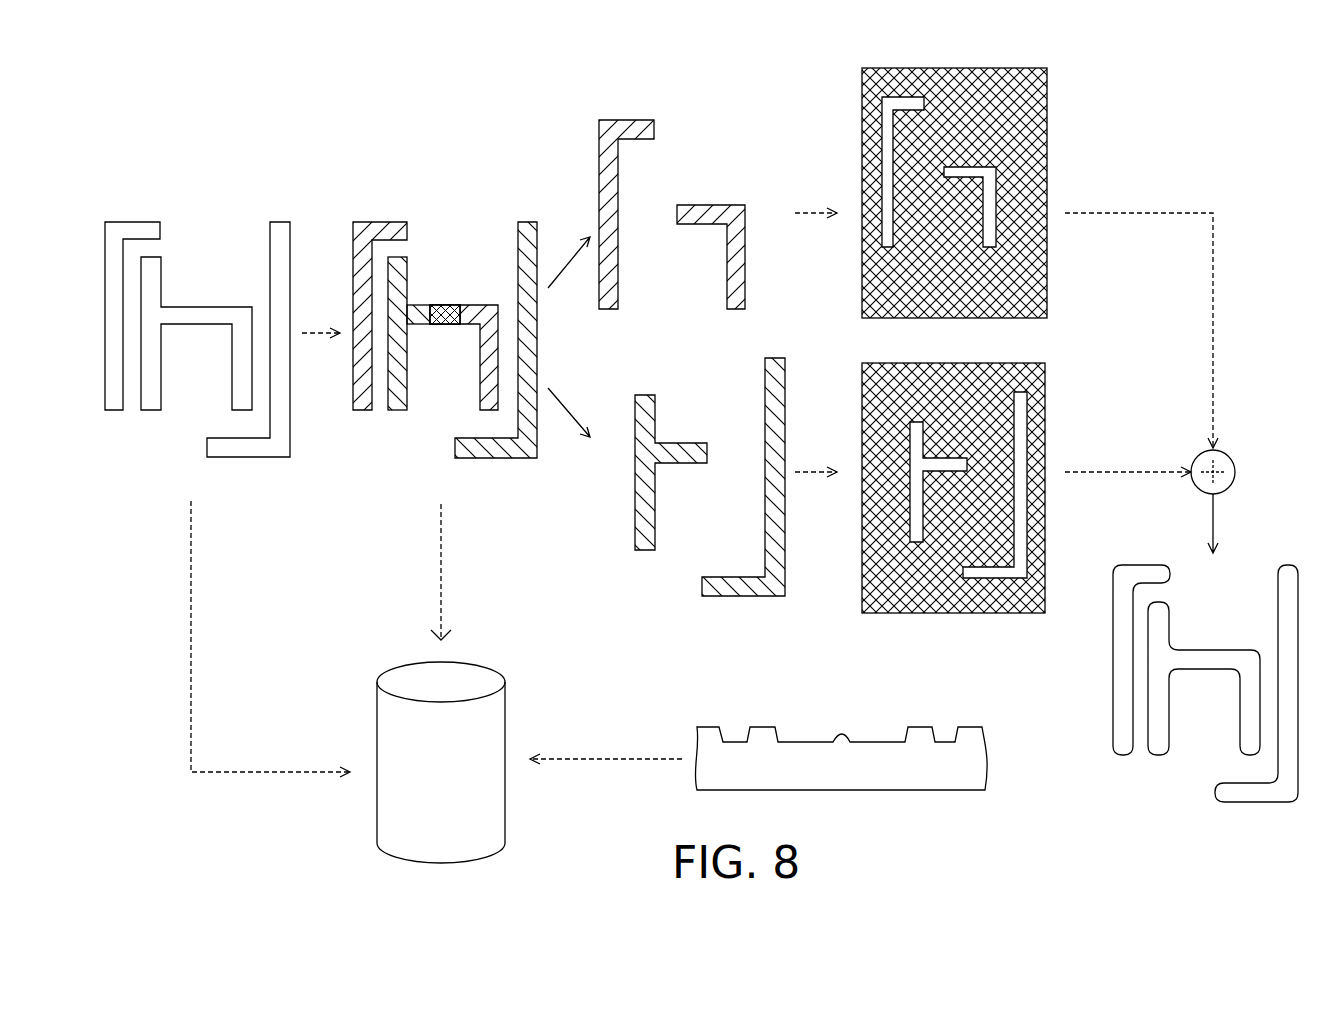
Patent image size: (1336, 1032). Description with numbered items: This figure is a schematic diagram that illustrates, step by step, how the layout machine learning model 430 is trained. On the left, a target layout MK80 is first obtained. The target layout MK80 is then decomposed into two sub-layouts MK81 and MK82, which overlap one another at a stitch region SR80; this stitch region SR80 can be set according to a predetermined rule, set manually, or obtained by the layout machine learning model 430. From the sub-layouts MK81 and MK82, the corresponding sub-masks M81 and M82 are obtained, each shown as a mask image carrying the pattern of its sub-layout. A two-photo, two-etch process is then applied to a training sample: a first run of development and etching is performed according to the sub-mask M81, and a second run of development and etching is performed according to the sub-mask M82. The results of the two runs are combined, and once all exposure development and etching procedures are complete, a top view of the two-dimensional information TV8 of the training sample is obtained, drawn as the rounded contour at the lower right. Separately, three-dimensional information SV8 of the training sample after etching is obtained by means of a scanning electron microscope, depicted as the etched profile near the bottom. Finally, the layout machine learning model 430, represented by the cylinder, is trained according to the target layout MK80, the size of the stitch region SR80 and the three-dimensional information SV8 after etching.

The target layout MK80 is at (148, 222).
The sub-layout MK81 is at (480, 303).
The sub-layout MK82 is at (455, 447).
The stitch region SR80 is at (444, 325).
The sub-mask M81 is at (1047, 100).
The sub-mask M82 is at (1045, 397).
The two-dimensional information TV8 is at (1125, 660).
The three-dimensional information SV8 is at (709, 740).
The layout machine learning model 430 is at (425, 847).